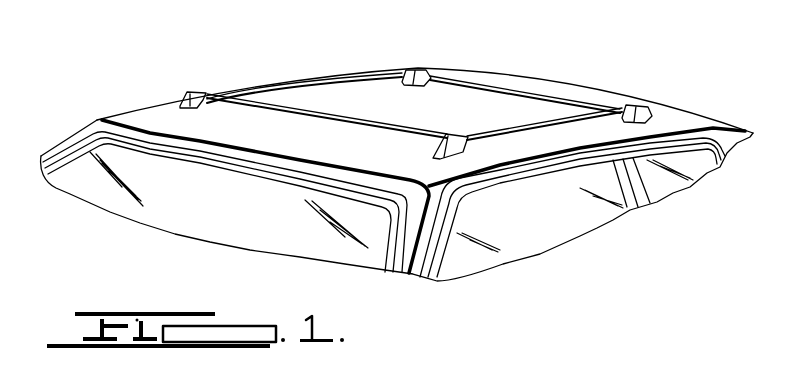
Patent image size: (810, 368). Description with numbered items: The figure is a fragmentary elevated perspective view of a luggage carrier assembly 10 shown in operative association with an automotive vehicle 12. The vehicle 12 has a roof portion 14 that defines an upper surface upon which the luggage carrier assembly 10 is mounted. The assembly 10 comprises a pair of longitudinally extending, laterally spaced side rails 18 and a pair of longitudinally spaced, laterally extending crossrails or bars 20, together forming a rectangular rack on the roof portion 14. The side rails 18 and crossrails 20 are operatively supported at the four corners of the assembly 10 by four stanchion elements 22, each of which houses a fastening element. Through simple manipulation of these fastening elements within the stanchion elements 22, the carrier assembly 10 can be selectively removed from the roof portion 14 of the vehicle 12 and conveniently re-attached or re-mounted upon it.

The luggage carrier assembly 10 is at (570, 82).
The automotive vehicle 12 is at (64, 130).
The roof portion 14 is at (240, 130).
The side rails 18 is at (303, 80).
The crossrails or bars 20 is at (510, 88).
The stanchion elements 22 is at (196, 90).